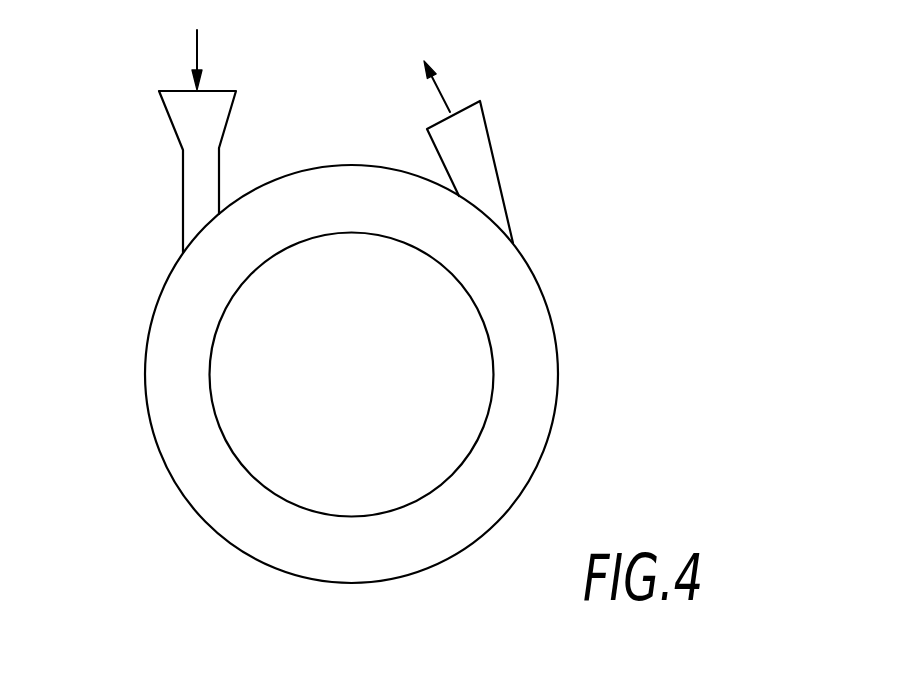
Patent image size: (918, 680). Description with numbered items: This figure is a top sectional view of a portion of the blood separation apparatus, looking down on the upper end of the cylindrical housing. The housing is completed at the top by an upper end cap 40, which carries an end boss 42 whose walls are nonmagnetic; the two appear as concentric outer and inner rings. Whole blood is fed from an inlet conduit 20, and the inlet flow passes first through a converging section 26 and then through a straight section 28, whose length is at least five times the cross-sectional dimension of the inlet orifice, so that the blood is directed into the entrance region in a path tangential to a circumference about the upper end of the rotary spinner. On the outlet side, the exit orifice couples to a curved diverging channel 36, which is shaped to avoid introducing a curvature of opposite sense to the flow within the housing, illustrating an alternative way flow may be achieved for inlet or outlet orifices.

The inlet conduit 20 is at (224, 141).
The converging section 26 is at (230, 115).
The straight section 28 is at (221, 175).
The curved diverging channel 36 is at (467, 142).
The upper end cap 40 is at (513, 287).
The end boss 42 is at (493, 371).